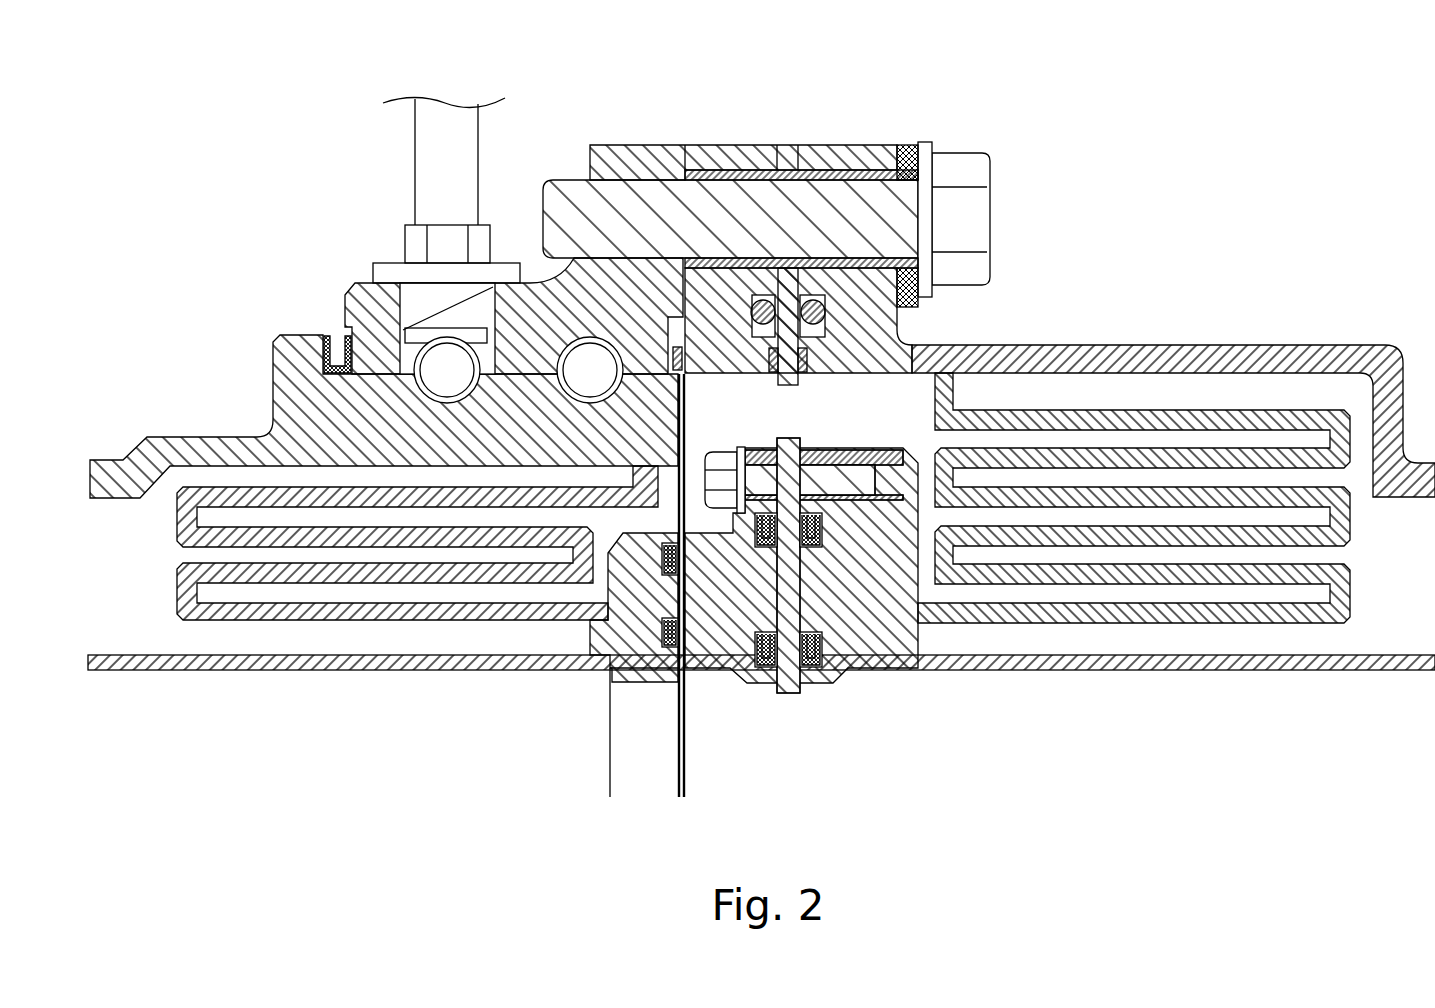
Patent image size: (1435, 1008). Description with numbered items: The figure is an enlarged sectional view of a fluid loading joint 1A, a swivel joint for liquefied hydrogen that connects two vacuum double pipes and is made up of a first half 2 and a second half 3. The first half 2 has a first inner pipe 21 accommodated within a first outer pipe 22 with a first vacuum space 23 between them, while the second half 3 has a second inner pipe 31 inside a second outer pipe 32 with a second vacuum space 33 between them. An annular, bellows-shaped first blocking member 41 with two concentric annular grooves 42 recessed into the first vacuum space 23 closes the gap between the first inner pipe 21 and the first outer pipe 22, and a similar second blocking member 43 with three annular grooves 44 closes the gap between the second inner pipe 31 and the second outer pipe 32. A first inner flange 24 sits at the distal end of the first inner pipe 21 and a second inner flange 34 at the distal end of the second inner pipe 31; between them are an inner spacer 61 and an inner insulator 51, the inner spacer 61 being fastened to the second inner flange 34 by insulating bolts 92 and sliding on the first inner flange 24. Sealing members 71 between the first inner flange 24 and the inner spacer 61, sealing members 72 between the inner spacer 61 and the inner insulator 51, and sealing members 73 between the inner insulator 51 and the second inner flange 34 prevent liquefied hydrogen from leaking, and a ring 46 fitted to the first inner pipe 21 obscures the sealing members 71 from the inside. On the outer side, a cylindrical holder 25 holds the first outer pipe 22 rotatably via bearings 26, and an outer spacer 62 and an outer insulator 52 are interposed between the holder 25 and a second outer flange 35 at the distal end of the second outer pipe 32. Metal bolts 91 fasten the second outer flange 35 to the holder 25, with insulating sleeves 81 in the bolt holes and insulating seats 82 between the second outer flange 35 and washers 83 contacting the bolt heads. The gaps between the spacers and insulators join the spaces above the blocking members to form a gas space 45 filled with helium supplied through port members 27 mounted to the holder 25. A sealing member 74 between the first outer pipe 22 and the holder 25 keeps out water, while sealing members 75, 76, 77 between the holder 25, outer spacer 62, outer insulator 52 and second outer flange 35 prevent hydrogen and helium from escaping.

The fluid loading joint 1A is at (1189, 224).
The first half 2 is at (200, 436).
The second half 3 is at (1343, 342).
The first inner pipe 21 is at (295, 669).
The first outer pipe 22 is at (301, 426).
The first vacuum space 23 is at (147, 595).
The first inner flange 24 is at (605, 669).
The holder 25 is at (643, 300).
The bearings 26 is at (447, 368).
The port members 27 is at (445, 234).
The second inner pipe 31 is at (1253, 668).
The second outer pipe 32 is at (1253, 345).
The second vacuum space 33 is at (1385, 594).
The second inner flange 34 is at (877, 578).
The second outer flange 35 is at (872, 300).
The first blocking member 41 is at (382, 614).
The annular grooves 42 is at (510, 517).
The second blocking member 43 is at (1140, 620).
The annular grooves 44 is at (1029, 442).
The gas space 45 is at (731, 401).
The ring 46 is at (658, 684).
The inner insulator 51 is at (744, 516).
The outer insulator 52 is at (818, 172).
The inner spacer 61 is at (720, 640).
The outer spacer 62 is at (744, 262).
The sealing members 71 is at (668, 560).
The sealing members 72 is at (766, 547).
The sealing members 73 is at (850, 502).
The sealing member 74 is at (302, 333).
The sealing member 75 is at (764, 298).
The sealing member 76 is at (813, 298).
The sealing member 77 is at (801, 378).
The sleeves 81 is at (908, 160).
The seats 82 is at (913, 150).
The washers 83 is at (927, 146).
The bolts 91 is at (980, 217).
The bolts 92 is at (860, 466).